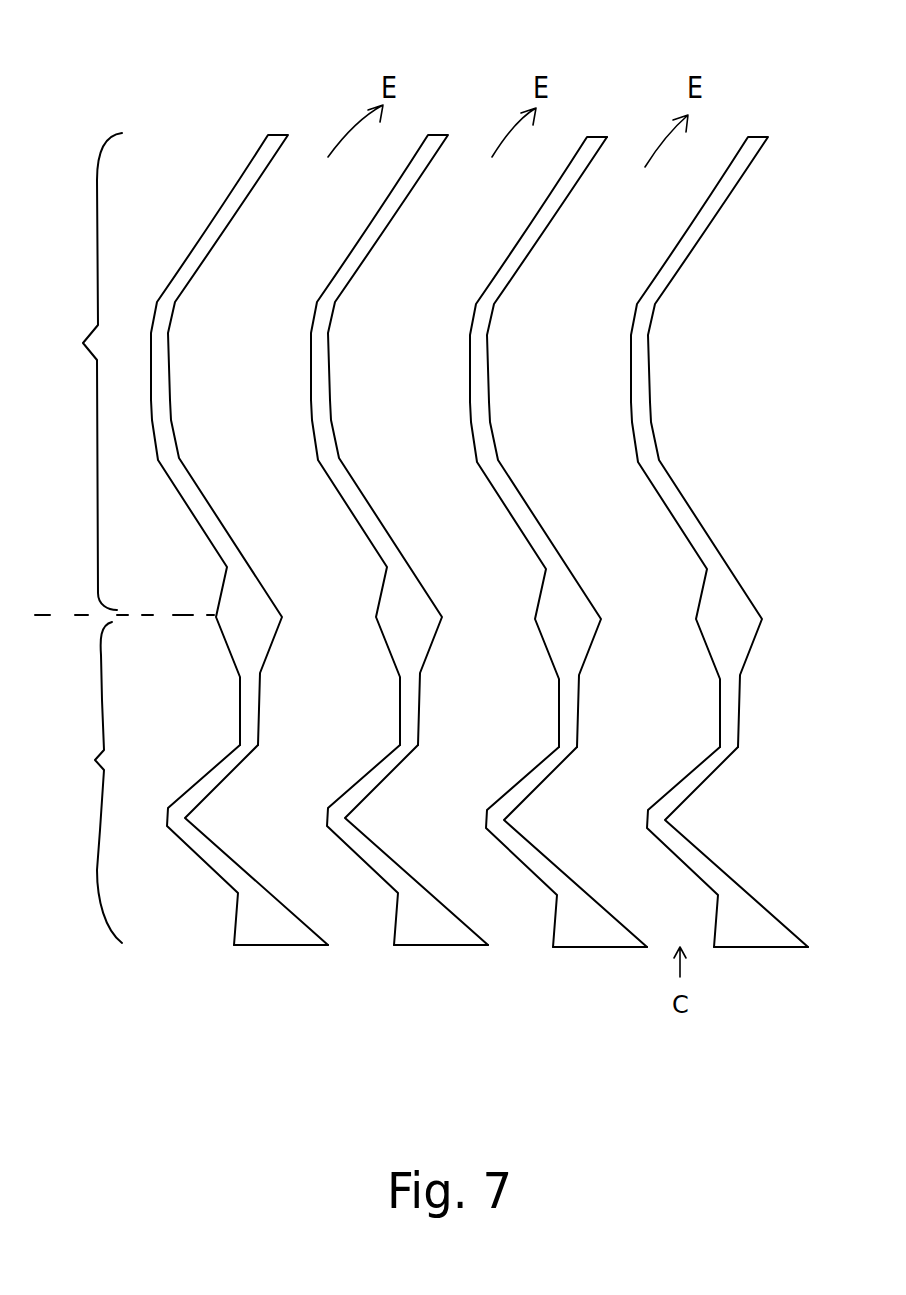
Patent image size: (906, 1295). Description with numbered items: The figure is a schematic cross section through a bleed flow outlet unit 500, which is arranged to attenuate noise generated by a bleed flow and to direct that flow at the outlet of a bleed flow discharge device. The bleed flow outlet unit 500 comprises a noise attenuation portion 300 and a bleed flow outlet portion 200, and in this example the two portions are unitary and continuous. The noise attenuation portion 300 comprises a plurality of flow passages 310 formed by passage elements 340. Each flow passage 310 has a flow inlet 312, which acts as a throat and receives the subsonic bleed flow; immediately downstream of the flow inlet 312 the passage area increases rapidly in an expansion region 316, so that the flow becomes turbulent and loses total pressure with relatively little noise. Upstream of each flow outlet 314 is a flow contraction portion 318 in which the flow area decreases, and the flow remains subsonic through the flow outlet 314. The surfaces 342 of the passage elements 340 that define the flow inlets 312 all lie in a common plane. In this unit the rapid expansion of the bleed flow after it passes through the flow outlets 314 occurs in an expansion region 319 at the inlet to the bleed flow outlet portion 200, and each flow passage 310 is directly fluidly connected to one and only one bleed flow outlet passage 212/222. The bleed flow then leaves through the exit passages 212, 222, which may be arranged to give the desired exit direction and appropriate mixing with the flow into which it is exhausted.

The bleed flow outlet unit 500 is at (108, 68).
The bleed flow outlet portion 200 is at (73, 371).
The noise attenuation portion 300 is at (73, 782).
The exit passage 212 is at (538, 303).
The exit passage 222 is at (558, 303).
The expansion region 319 is at (372, 572).
The flow outlet 314 is at (535, 574).
The flow contraction portion 318 is at (556, 794).
The flow passage 310 is at (707, 845).
The expansion region 316 is at (572, 929).
The flow inlet 312 is at (530, 883).
The surface 342 is at (410, 982).
The passage element 340 is at (407, 882).